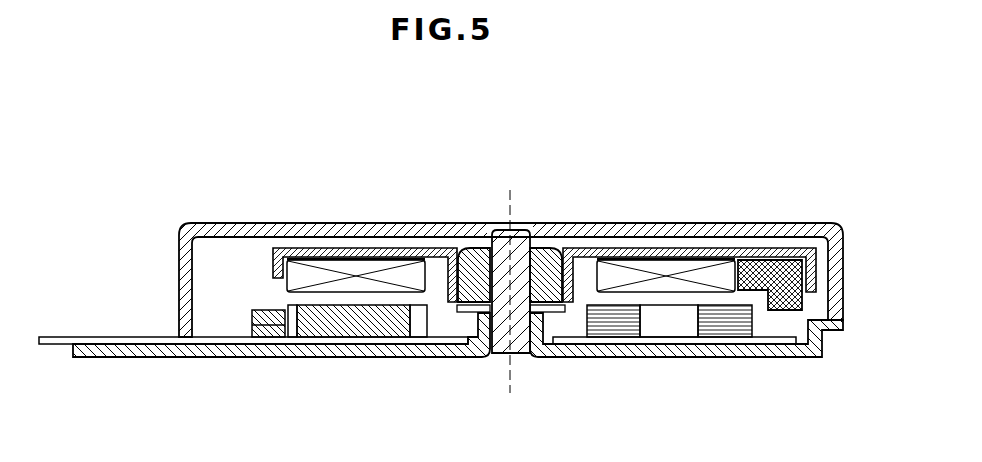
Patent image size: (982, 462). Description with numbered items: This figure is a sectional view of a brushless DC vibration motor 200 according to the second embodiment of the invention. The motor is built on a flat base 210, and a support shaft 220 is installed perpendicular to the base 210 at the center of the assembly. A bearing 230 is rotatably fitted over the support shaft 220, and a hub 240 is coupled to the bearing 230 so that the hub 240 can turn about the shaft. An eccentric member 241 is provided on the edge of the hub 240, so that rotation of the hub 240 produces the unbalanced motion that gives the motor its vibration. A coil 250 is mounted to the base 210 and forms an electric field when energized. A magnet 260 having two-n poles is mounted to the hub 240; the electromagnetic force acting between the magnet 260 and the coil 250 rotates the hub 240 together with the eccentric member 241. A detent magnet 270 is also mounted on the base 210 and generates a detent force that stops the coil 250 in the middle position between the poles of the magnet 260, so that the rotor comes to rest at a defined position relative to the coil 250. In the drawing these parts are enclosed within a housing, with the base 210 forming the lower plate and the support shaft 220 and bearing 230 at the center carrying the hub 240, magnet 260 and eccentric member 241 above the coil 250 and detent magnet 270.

The BLDC vibration motor 200 is at (230, 133).
The base 210 is at (157, 352).
The support shaft 220 is at (505, 240).
The bearing 230 is at (546, 258).
The hub 240 is at (615, 256).
The eccentric member 241 is at (768, 266).
The coil 250 is at (726, 323).
The magnet 260 is at (668, 267).
The detent magnet 270 is at (270, 330).